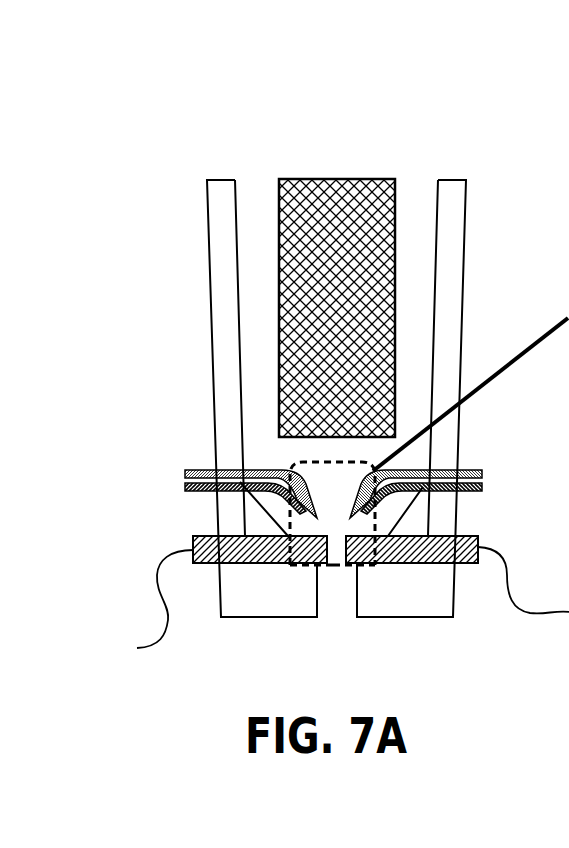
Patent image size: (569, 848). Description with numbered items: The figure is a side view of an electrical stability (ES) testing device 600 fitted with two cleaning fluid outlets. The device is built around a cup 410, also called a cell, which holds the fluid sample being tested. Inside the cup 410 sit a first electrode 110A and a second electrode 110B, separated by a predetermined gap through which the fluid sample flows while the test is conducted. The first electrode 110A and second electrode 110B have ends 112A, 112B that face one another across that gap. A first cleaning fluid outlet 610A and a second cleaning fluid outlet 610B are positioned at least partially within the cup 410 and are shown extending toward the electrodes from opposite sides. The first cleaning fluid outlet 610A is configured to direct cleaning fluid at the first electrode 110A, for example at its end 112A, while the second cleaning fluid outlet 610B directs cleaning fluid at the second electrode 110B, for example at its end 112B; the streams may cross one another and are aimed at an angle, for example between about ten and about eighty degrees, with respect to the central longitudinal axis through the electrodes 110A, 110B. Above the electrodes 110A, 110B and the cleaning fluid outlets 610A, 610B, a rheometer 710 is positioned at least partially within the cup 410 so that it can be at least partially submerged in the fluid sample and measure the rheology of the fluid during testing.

The ES testing device 600 is at (186, 74).
The cup 410 is at (210, 335).
The rheometer 710 is at (334, 180).
The first cleaning fluid outlet 610A is at (468, 470).
The second cleaning fluid outlet 610B is at (198, 470).
The first electrode 110A is at (248, 563).
The second electrode 110B is at (403, 563).
The end of first electrode 112A is at (336, 567).
The end of second electrode 112B is at (340, 565).